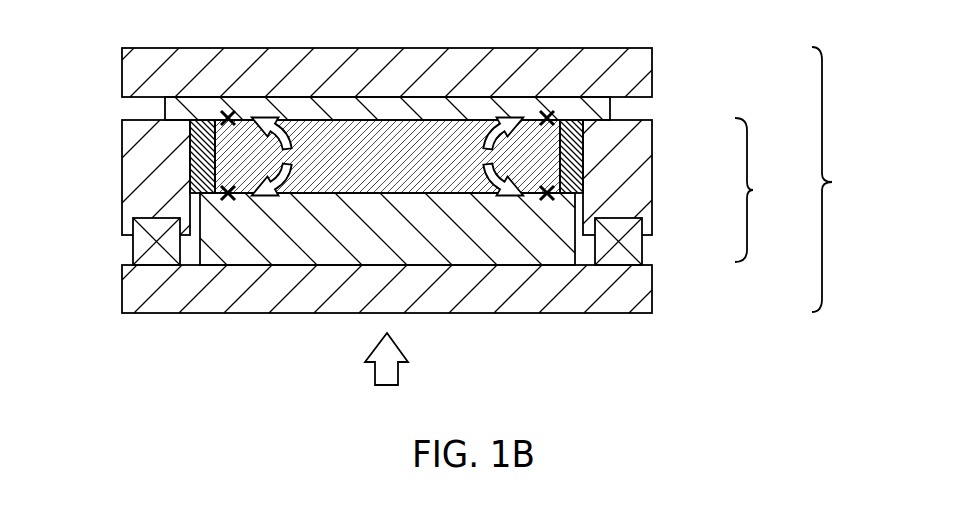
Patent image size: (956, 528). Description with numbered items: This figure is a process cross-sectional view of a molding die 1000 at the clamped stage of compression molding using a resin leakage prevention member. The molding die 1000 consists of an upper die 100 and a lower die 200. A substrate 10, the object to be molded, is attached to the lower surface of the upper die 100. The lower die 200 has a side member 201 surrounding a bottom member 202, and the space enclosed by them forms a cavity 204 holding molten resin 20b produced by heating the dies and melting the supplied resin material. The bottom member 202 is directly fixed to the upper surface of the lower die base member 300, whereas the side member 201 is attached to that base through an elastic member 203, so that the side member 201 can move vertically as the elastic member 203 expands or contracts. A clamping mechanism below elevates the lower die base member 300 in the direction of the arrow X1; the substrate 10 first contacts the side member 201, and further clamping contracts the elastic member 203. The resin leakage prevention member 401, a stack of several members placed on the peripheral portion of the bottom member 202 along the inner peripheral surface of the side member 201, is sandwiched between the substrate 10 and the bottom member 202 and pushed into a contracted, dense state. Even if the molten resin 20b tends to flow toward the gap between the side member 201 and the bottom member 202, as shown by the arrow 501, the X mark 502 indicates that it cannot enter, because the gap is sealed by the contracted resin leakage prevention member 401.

The upper die 100 is at (640, 72).
The substrate 10 is at (592, 109).
The side member 201 is at (640, 140).
The resin leakage prevention member 401 is at (205, 180).
The cavity 204 is at (580, 176).
The molten resin 20b is at (237, 145).
The bottom member 202 is at (553, 217).
The elastic member 203 is at (628, 248).
The lower die base member 300 is at (637, 288).
The arrow 501 is at (272, 114).
The X mark 502 is at (228, 112).
The lower die 200 is at (769, 190).
The molding die 1000 is at (852, 179).
The arrow X1 is at (382, 373).